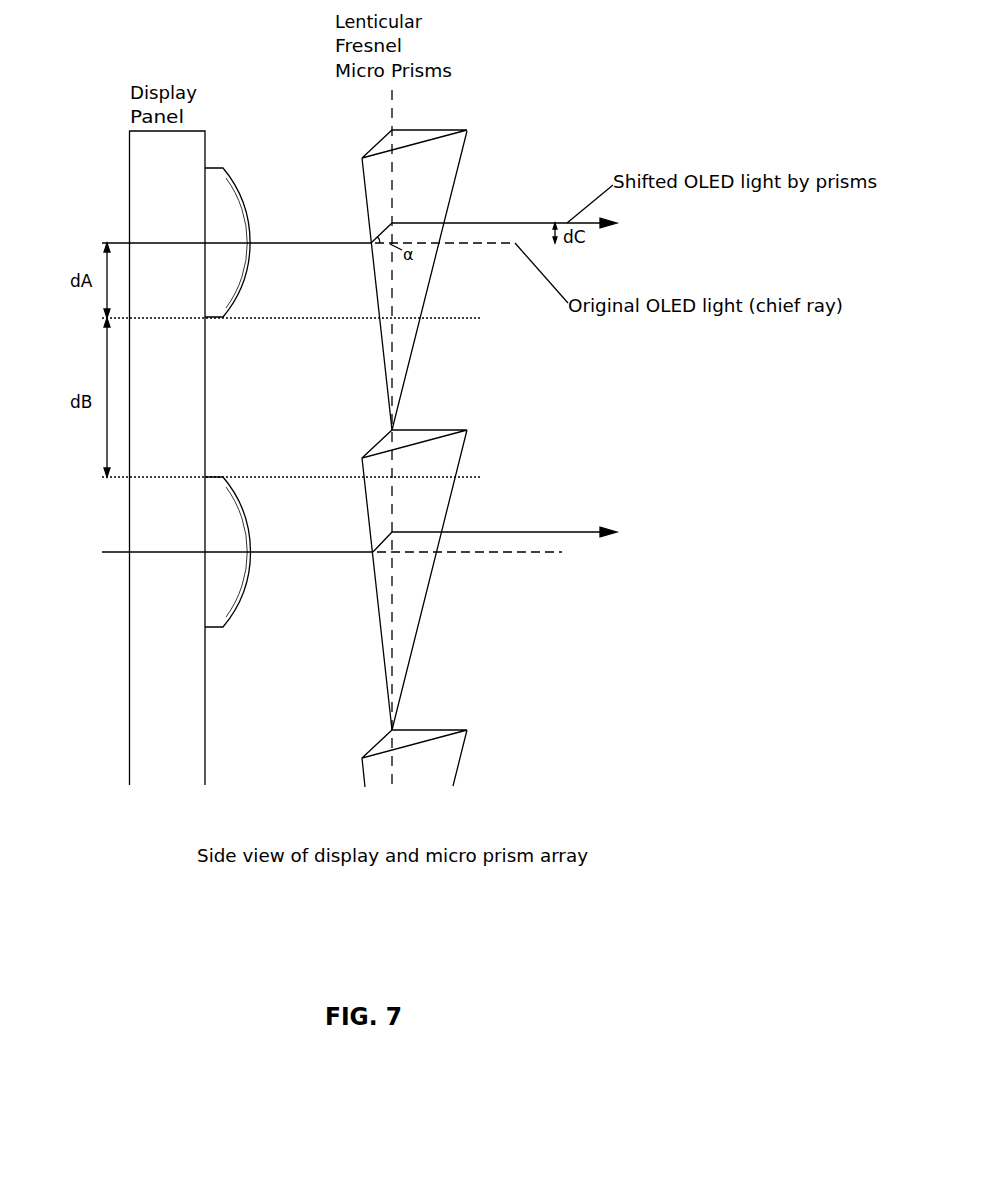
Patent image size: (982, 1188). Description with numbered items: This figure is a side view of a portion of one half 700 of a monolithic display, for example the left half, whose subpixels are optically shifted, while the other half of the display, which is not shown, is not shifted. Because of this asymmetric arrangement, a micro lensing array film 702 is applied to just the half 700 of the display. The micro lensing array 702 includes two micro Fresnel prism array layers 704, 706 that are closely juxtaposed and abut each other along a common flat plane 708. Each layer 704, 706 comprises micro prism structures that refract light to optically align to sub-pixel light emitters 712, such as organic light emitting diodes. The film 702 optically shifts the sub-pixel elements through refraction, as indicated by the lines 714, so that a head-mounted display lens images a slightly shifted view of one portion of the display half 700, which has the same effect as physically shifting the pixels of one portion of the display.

The half of a monolithic display 700 is at (149, 483).
The micro lensing array film 702 is at (492, 445).
The micro Fresnel prism array layer 704 is at (362, 390).
The micro Fresnel prism array layer 706 is at (513, 447).
The common flat plane 708 is at (392, 785).
The sub-pixel light emitters 712 is at (220, 593).
The lines 714 is at (433, 205).